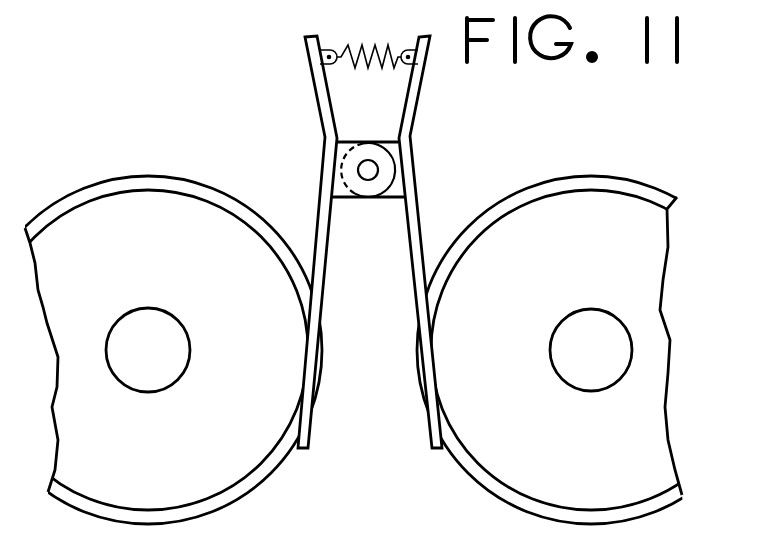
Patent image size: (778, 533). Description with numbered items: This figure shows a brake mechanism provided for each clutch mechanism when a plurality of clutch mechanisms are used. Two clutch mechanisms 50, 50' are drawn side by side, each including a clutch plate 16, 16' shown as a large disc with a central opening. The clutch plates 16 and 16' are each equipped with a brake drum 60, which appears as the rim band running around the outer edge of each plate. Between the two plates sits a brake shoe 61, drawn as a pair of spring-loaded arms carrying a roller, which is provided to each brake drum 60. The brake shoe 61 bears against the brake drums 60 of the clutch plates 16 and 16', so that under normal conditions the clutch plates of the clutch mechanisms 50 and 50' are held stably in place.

The clutch plate 16 is at (107, 306).
The clutch plate 16' is at (616, 305).
The clutch mechanism 50 is at (161, 311).
The clutch mechanism 50' is at (591, 310).
The brake drum 60 is at (202, 202).
The brake shoe 61 is at (433, 420).